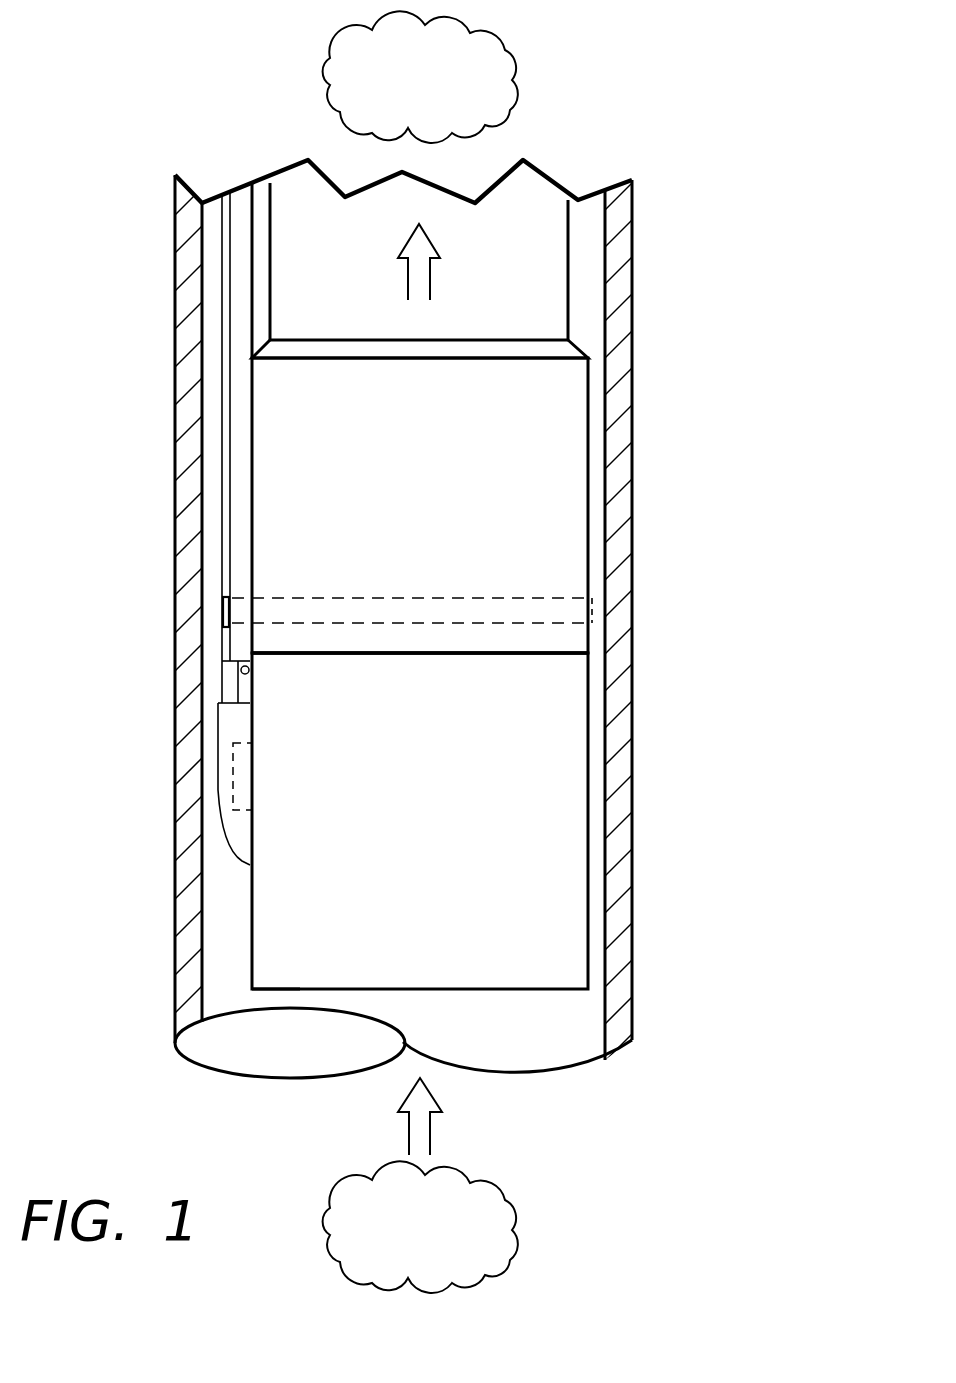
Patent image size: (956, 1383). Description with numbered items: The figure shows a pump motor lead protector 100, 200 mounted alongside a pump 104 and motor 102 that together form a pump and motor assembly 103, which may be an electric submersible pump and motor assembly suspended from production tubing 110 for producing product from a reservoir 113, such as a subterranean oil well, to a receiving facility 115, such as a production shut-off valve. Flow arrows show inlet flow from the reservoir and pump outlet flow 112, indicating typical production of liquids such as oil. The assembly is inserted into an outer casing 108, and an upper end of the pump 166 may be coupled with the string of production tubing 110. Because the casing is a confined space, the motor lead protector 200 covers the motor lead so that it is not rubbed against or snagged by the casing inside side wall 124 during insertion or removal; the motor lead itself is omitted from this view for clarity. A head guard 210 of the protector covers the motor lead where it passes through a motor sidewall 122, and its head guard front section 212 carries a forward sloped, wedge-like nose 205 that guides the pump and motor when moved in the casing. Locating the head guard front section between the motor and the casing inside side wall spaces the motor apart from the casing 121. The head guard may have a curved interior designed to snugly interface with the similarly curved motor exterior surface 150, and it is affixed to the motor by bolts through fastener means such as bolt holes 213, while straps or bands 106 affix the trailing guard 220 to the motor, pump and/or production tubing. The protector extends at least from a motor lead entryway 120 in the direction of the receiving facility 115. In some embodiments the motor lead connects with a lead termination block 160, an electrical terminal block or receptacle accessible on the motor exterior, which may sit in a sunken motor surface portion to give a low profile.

The motor lead protector 100 is at (104, 192).
The motor 102 is at (442, 894).
The pump and motor assembly 103 is at (605, 652).
The pump 104 is at (442, 480).
The straps or bands 106 is at (518, 598).
The casing 108 is at (190, 458).
The production tubing 110 is at (570, 266).
The pump outlet flow 112 is at (423, 273).
The reservoir 113 is at (422, 1128).
The receiving facility 115 is at (445, 90).
The motor lead entryway 120 is at (252, 790).
The spacing of motor from casing 121 is at (227, 905).
The motor sidewall 122 is at (250, 923).
The casing inside side wall 124 is at (205, 358).
The motor exterior surface 150 is at (247, 988).
The lead termination block 160 is at (235, 772).
The upper end of the pump 166 is at (546, 356).
The pump motor lead protector 200 is at (200, 636).
The nose 205 is at (238, 860).
The head guard 210 is at (200, 726).
The head guard front section 212 is at (220, 773).
The bolt holes 213 is at (244, 672).
The trailing guard 220 is at (200, 545).